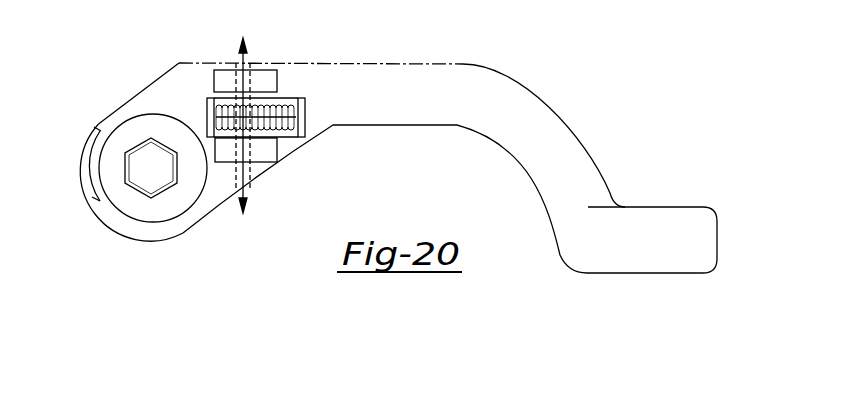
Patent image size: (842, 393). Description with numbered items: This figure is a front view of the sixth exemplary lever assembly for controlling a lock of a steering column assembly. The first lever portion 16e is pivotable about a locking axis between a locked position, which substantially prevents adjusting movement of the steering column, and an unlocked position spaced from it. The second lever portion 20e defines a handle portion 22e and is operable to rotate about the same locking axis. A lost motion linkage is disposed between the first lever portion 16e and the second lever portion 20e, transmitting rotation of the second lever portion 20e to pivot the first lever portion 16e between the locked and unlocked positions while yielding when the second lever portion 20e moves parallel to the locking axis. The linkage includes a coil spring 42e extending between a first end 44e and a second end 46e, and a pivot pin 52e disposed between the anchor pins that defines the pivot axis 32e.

The first lever portion 16e is at (411, 169).
The second lever portion 20e is at (438, 195).
The handle portion 22e is at (688, 250).
The pivot axis 32e is at (247, 192).
The coil spring 42e is at (290, 100).
The first end 44e is at (274, 74).
The second end 46e is at (298, 117).
The pivot pin 52e is at (249, 172).